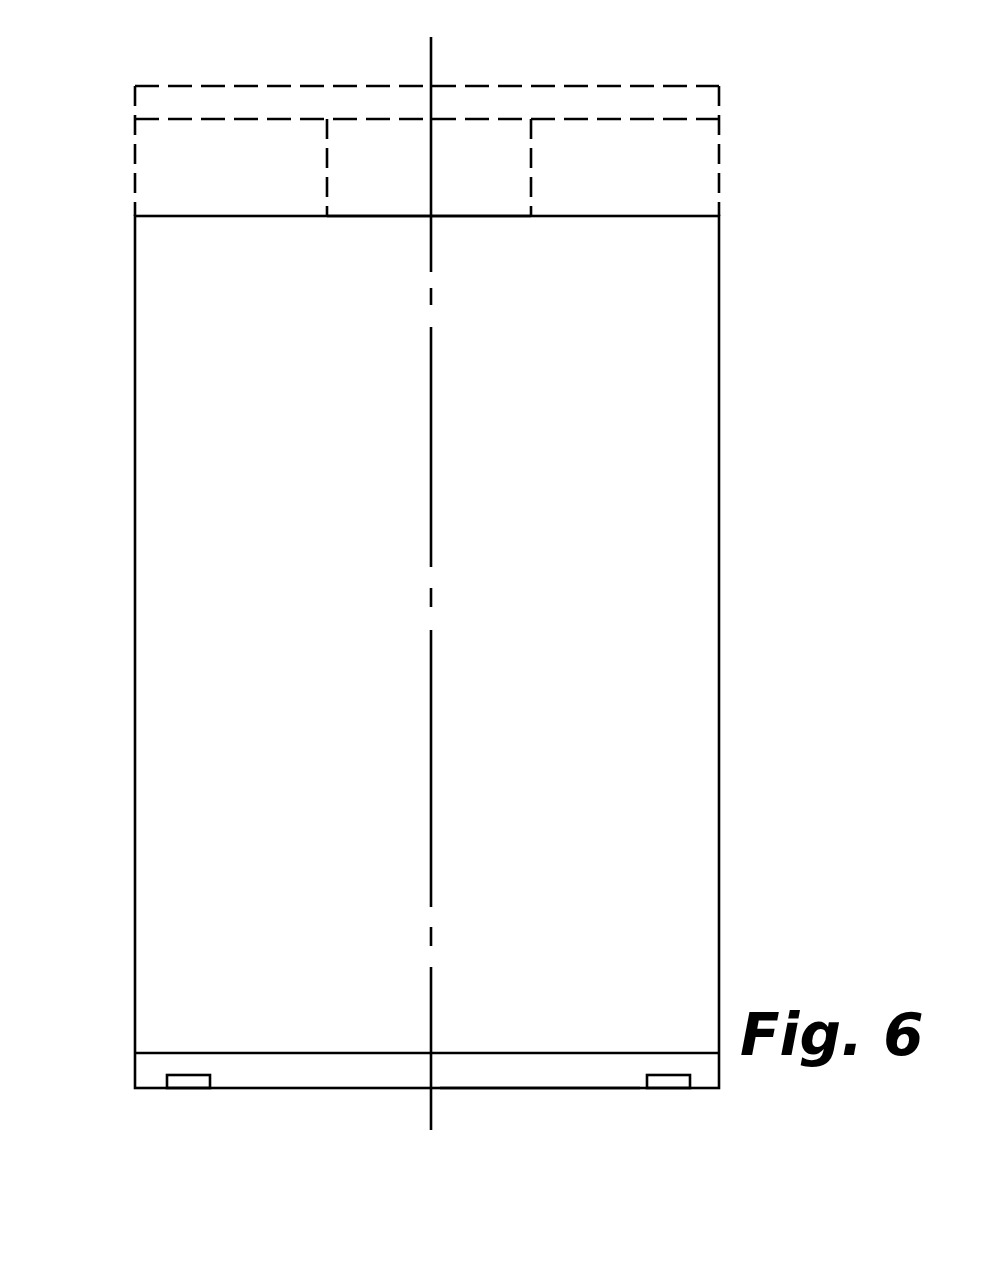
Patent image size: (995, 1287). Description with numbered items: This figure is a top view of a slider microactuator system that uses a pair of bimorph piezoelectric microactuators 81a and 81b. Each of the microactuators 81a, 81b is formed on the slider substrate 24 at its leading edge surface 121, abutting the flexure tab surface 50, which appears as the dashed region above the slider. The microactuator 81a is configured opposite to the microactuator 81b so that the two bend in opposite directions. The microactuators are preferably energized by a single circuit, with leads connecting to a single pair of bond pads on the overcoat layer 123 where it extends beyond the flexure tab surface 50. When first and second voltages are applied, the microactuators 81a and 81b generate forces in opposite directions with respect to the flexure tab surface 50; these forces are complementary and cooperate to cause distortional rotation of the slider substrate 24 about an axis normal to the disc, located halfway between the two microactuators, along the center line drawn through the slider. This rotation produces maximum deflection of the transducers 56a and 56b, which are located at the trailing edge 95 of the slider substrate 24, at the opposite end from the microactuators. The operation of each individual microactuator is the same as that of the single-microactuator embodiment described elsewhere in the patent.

The slider substrate 24 is at (695, 393).
The flexure tab surface 50 is at (510, 86).
The bimorph piezoelectric microactuator 81a is at (719, 172).
The bimorph piezoelectric microactuator 81b is at (135, 162).
The leading edge surface 121 is at (377, 216).
The overcoat layer 123 is at (391, 119).
The transducer 56a is at (667, 1089).
The transducer 56b is at (183, 1089).
The trailing edge 95 is at (530, 1078).